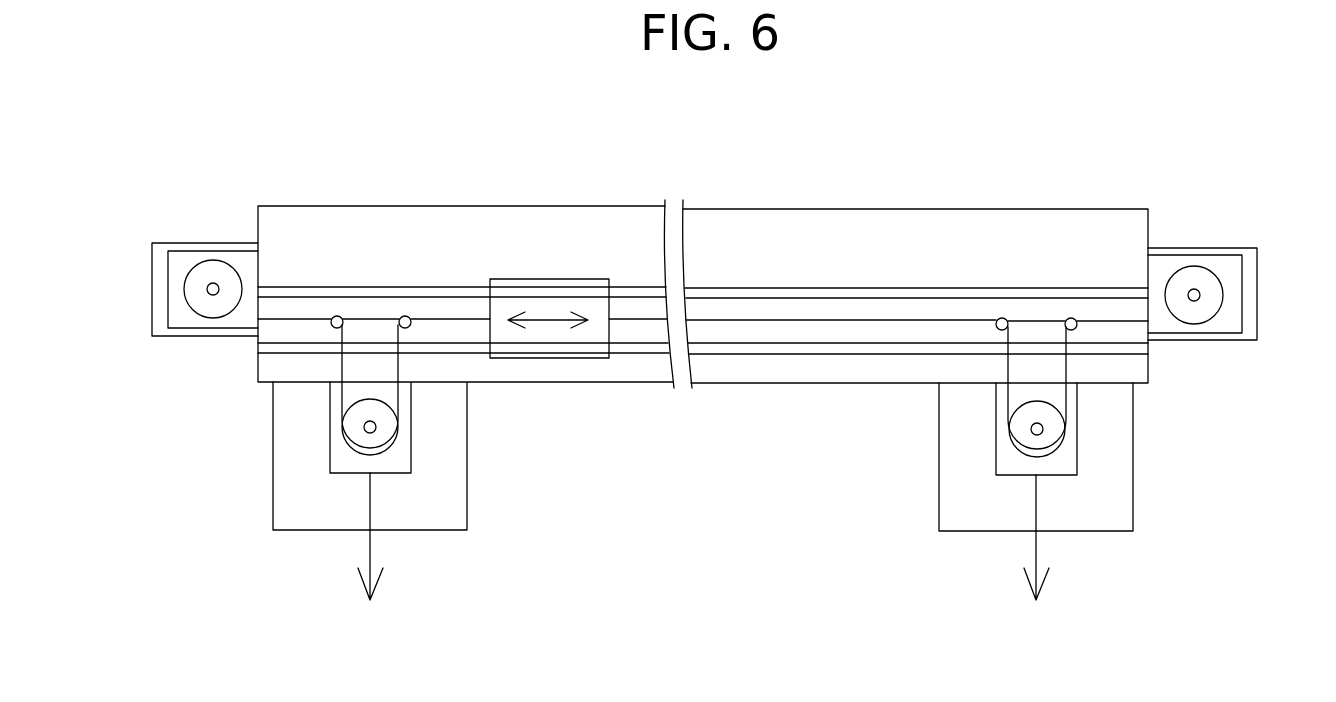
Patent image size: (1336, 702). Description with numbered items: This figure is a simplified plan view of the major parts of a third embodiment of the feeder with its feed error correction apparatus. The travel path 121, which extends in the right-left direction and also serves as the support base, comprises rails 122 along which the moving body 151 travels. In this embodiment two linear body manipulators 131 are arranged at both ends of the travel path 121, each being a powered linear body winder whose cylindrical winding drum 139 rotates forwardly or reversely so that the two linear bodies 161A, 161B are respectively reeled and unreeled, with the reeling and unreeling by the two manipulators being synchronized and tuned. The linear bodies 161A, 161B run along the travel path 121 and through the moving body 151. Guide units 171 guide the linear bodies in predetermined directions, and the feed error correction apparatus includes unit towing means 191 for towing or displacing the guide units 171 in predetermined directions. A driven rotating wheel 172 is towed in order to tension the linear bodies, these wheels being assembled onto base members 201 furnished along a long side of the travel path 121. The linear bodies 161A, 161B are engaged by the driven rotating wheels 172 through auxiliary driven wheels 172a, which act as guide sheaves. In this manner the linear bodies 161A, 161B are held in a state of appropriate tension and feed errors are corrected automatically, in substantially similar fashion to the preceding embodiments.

The travel path 121 is at (828, 237).
The rails 122 is at (940, 349).
The linear body manipulator 131 is at (203, 226).
The winding drum 139 is at (224, 278).
The moving body 151 is at (570, 288).
The linear body 161A is at (430, 318).
The linear body 161B is at (765, 318).
The guide unit 171 is at (313, 409).
The driven rotating wheel 172 is at (353, 426).
The auxiliary driven wheel 172a is at (405, 316).
The unit towing means 191 is at (348, 493).
The base member 201 is at (258, 545).